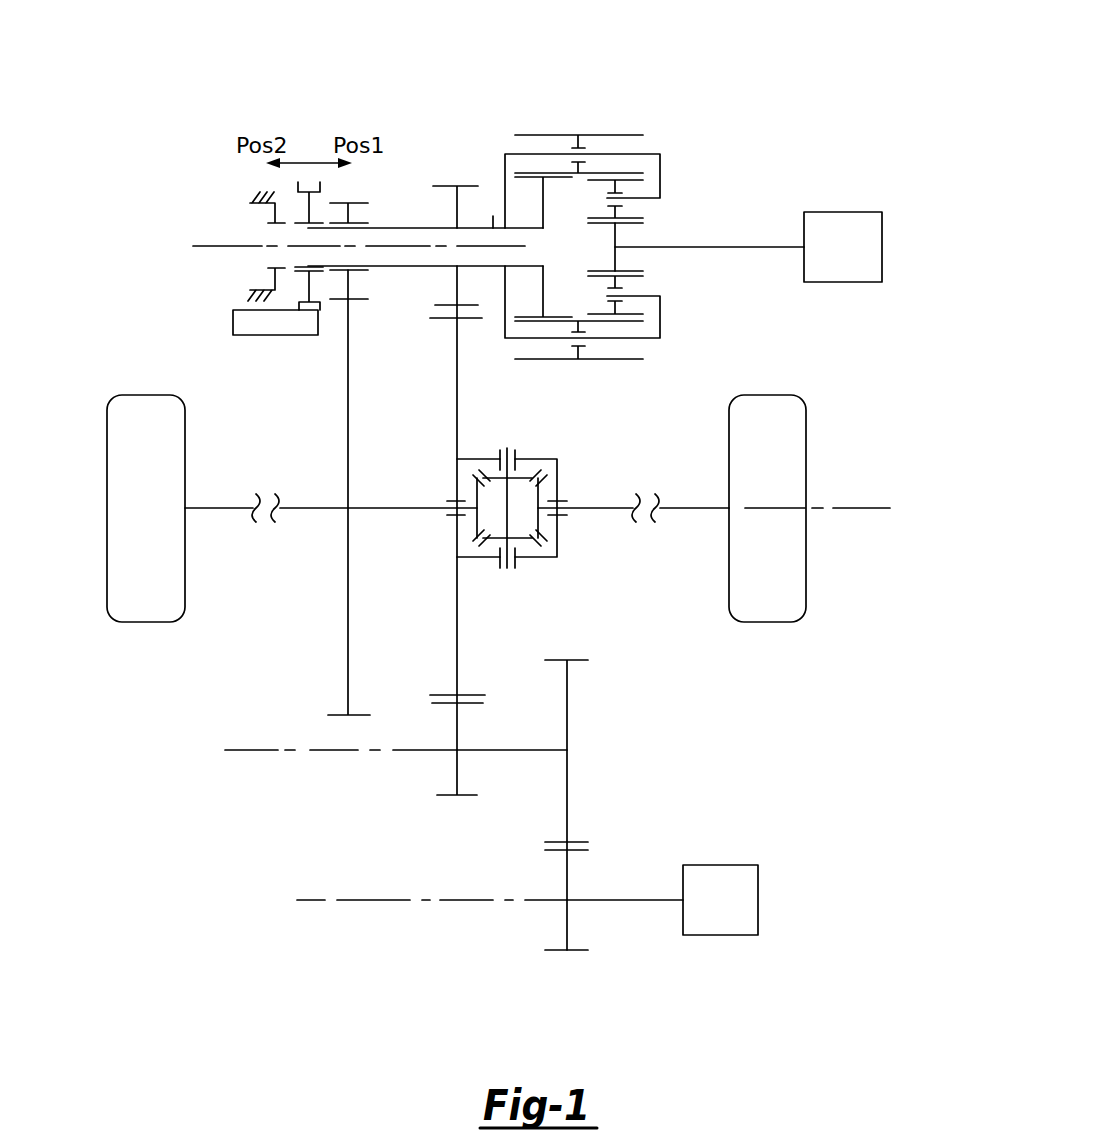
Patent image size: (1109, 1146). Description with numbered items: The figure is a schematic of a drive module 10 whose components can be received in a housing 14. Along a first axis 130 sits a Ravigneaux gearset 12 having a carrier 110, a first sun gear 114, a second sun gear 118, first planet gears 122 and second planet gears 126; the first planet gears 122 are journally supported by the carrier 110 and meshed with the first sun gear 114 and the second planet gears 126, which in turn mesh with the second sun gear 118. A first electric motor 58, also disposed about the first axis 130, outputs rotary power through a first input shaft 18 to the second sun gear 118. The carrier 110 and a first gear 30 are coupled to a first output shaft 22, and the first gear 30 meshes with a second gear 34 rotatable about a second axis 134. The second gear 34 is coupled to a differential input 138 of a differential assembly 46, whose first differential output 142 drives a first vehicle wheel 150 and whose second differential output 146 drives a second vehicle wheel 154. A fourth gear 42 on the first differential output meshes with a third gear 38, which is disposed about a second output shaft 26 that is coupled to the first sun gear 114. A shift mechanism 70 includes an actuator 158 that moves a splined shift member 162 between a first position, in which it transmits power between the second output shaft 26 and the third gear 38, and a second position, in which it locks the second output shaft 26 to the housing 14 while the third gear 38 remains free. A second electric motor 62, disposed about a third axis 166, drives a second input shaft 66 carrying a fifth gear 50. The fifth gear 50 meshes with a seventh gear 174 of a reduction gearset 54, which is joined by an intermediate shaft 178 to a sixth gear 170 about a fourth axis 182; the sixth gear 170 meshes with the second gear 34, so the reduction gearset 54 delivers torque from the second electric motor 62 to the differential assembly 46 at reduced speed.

The drive module 10 is at (787, 64).
The Ravigneaux gearset 12 is at (688, 124).
The housing 14 is at (253, 290).
The first input shaft 18 is at (758, 249).
The first output shaft 22 is at (493, 216).
The second output shaft 26 is at (390, 227).
The first gear 30 is at (453, 203).
The second gear 34 is at (470, 320).
The third gear 38 is at (362, 285).
The fourth gear 42 is at (348, 403).
The differential assembly 46 is at (574, 572).
The fifth gear 50 is at (557, 952).
The reduction gearset 54 is at (478, 820).
The first electric motor 58 is at (867, 212).
The second electric motor 62 is at (737, 865).
The second input shaft 66 is at (640, 902).
The shift mechanism 70 is at (270, 346).
The carrier 110 is at (500, 154).
The first sun gear 114 is at (548, 290).
The second sun gear 118 is at (618, 245).
The first planet gears 122 is at (597, 135).
The second planet gears 126 is at (637, 215).
The first axis 130 is at (208, 245).
The second axis 134 is at (858, 507).
The differential input 138 is at (457, 415).
The first differential output 142 is at (317, 510).
The second differential output 146 is at (598, 508).
The first vehicle wheel 150 is at (132, 622).
The second vehicle wheel 154 is at (806, 560).
The actuator 158 is at (233, 315).
The shift member 162 is at (305, 223).
The third axis 166 is at (315, 900).
The sixth gear 170 is at (448, 793).
The seventh gear 174 is at (578, 662).
The intermediate shaft 178 is at (525, 750).
The fourth axis 182 is at (245, 750).